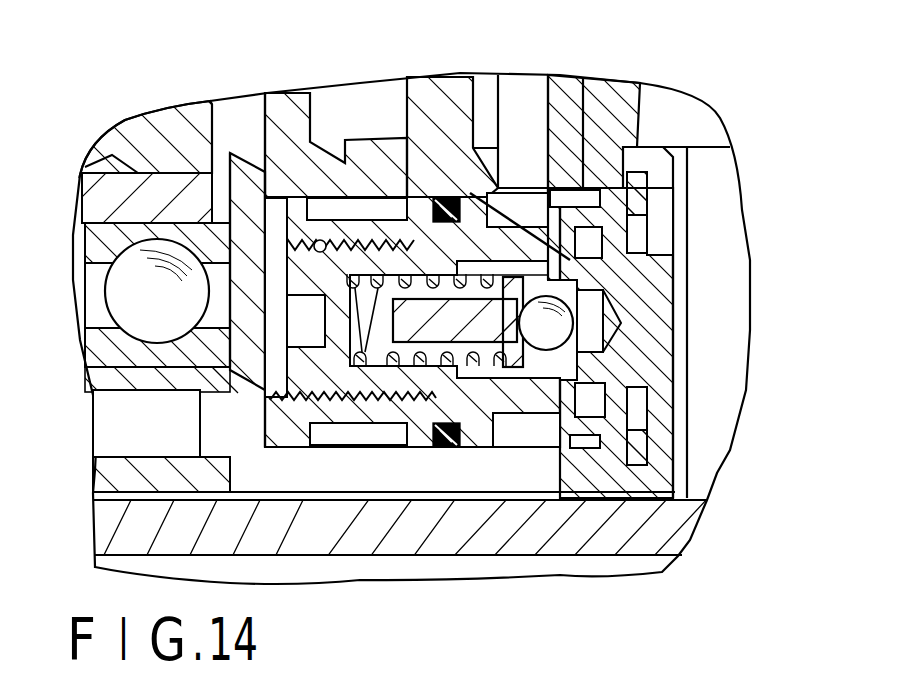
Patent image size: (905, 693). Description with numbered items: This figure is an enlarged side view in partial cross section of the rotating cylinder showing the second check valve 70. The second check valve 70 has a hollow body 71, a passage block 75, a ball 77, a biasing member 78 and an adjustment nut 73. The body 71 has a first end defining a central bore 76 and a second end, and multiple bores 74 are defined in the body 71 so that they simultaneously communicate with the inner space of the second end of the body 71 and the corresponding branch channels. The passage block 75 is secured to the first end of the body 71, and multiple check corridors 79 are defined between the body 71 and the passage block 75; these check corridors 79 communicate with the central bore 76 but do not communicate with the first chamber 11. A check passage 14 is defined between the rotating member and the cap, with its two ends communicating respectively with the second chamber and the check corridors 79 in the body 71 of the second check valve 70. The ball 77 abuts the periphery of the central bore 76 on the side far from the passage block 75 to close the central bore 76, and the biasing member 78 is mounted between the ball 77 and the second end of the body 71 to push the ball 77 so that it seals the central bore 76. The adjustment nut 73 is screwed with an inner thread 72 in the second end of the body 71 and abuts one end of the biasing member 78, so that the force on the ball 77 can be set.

The first chamber 11 is at (708, 473).
The check passage 14 is at (518, 100).
The second check valve 70 is at (452, 150).
The hollow body 71 is at (335, 218).
The inner thread 72 is at (306, 197).
The adjustment nut 73 is at (290, 418).
The bores 74 is at (402, 345).
The passage block 75 is at (673, 290).
The central bore 76 is at (573, 330).
The ball 77 is at (540, 342).
The biasing member 78 is at (427, 275).
The check corridors 79 is at (547, 247).